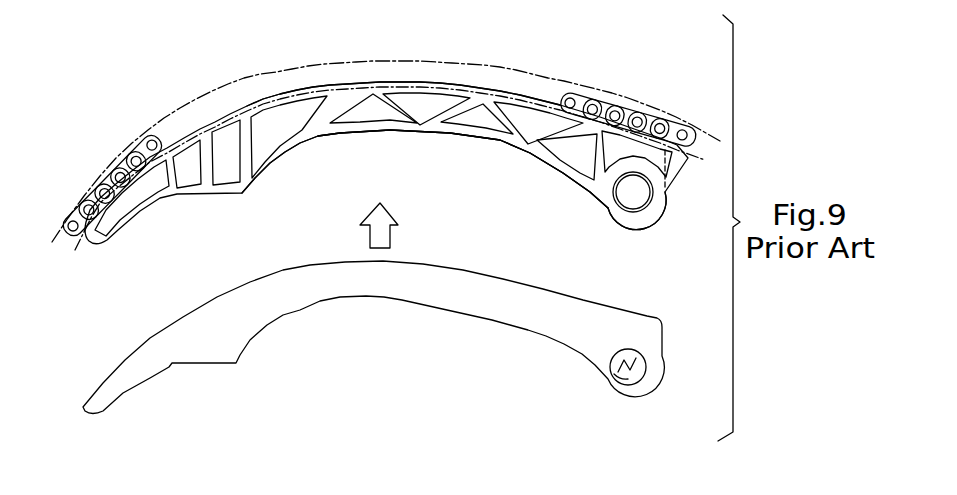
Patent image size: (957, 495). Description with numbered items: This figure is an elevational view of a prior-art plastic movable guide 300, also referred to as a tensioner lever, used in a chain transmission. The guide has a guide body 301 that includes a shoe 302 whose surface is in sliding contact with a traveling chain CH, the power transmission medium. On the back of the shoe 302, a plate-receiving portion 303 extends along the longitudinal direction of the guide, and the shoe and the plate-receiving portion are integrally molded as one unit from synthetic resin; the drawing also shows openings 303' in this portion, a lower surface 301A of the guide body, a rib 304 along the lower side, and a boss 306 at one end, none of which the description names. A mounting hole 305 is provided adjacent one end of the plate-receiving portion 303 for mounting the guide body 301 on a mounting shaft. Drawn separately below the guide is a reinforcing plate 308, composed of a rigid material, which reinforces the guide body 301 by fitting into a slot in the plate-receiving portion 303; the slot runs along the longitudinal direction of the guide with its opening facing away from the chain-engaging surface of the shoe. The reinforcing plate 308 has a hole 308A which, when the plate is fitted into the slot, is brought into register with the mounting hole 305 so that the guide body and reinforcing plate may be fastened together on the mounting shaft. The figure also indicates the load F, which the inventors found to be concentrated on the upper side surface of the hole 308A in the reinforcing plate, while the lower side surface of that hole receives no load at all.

The plastic movable guide 300 is at (484, 28).
The guide body 301 is at (664, 200).
The lower surface of guide body 301A is at (582, 207).
The shoe 302 is at (343, 84).
The plate-receiving portion 303 is at (270, 106).
The opening in guide body 303' is at (466, 146).
The reinforcing rib 304 is at (287, 148).
The mounting hole 305 is at (622, 208).
The pivot boss 306 is at (640, 222).
The chain CH is at (92, 190).
The reinforcing plate 308 is at (433, 295).
The hole 308A is at (610, 385).
The load F is at (655, 370).